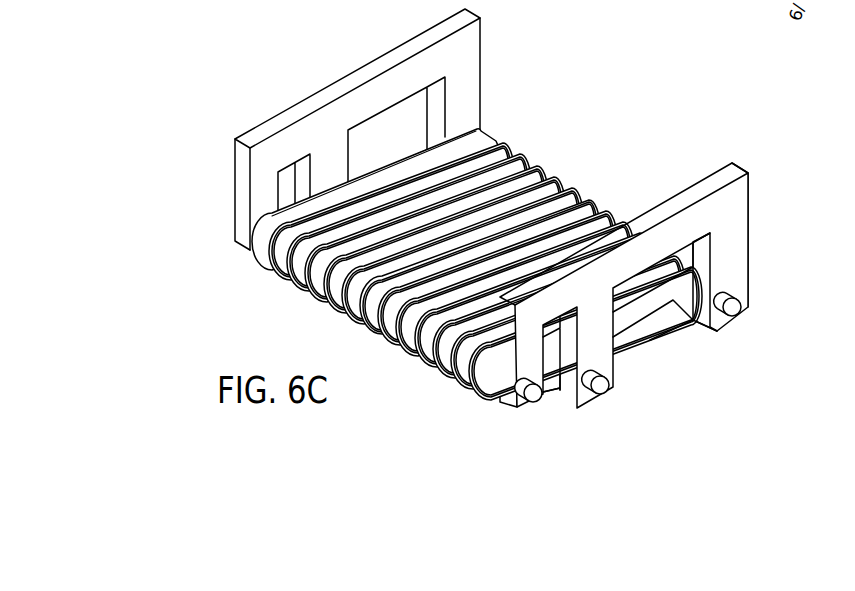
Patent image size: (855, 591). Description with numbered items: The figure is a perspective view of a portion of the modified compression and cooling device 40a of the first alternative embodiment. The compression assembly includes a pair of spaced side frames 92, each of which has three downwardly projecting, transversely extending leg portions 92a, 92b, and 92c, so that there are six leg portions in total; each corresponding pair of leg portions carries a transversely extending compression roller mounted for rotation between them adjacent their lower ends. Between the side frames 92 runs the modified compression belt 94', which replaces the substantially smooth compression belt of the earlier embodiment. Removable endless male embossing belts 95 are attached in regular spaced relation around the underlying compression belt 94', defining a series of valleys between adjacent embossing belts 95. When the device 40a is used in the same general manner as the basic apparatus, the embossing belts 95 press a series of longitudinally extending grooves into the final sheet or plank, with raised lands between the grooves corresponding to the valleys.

The modified compression and cooling device 40a is at (692, 101).
The side frame 92 is at (380, 62).
The leg portion 92a is at (242, 192).
The leg portion 92b is at (337, 163).
The leg portion 92c is at (463, 98).
The modified compression belt 94' is at (443, 231).
The embossing belt 95 is at (286, 278).